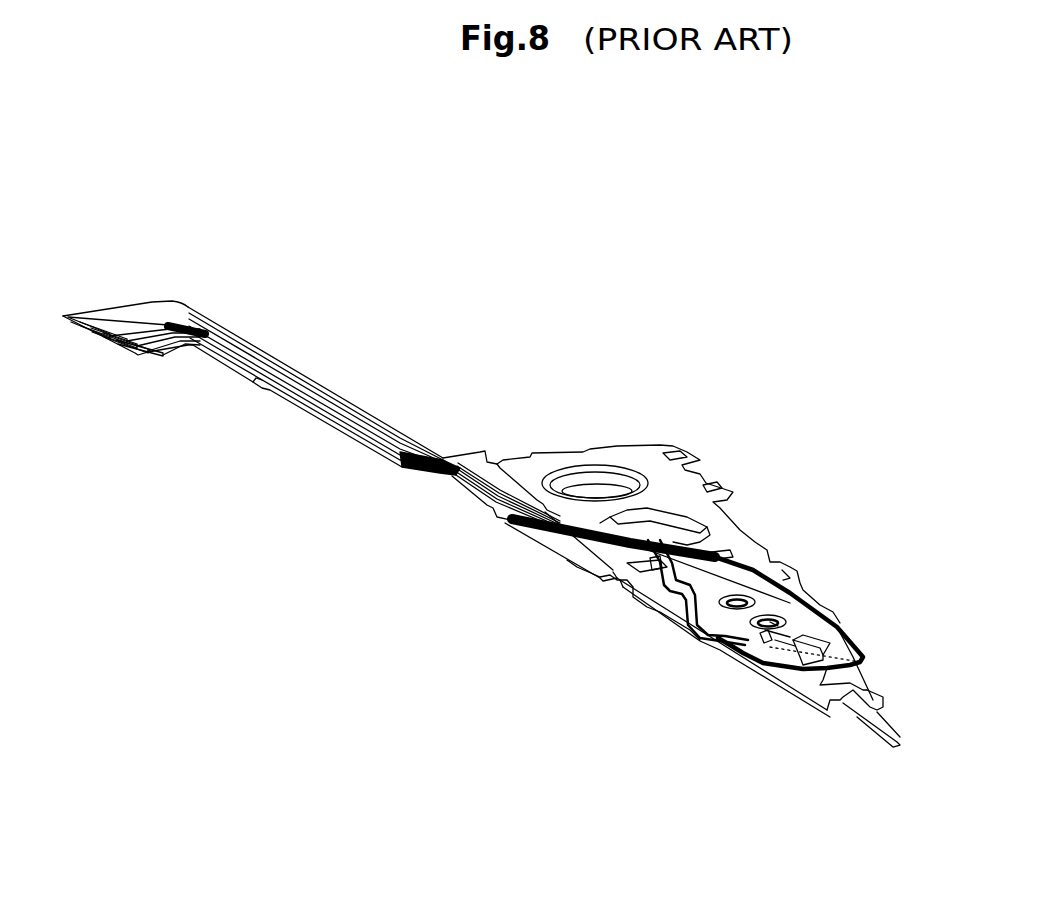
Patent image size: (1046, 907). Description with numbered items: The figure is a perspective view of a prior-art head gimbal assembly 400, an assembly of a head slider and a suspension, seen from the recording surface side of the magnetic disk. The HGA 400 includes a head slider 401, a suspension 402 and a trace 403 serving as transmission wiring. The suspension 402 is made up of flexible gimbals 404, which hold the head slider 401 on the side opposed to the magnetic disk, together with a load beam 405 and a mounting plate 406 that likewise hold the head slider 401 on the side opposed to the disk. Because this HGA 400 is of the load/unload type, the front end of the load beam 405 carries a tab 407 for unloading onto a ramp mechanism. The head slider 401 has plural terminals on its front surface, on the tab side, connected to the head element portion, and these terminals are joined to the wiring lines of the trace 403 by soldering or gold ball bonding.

The head gimbal assembly 400 is at (512, 356).
The head slider 401 is at (748, 666).
The suspension 402 is at (833, 507).
The trace 403 is at (362, 410).
The flexible gimbals 404 is at (833, 618).
The load beam 405 is at (788, 573).
The mounting plate 406 is at (633, 446).
The tab 407 is at (897, 745).